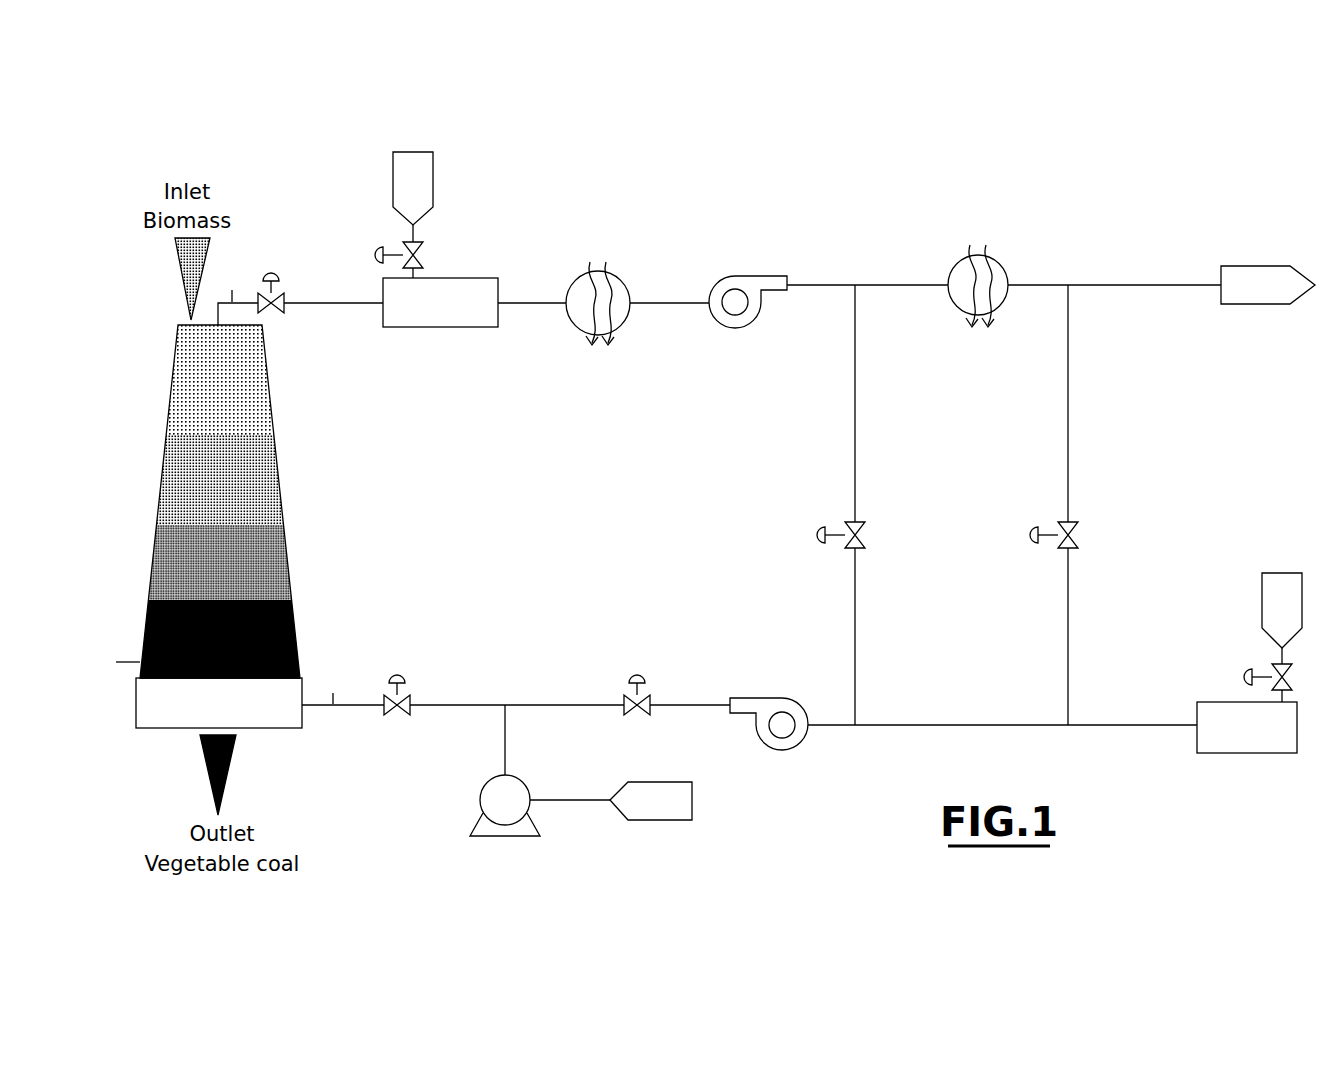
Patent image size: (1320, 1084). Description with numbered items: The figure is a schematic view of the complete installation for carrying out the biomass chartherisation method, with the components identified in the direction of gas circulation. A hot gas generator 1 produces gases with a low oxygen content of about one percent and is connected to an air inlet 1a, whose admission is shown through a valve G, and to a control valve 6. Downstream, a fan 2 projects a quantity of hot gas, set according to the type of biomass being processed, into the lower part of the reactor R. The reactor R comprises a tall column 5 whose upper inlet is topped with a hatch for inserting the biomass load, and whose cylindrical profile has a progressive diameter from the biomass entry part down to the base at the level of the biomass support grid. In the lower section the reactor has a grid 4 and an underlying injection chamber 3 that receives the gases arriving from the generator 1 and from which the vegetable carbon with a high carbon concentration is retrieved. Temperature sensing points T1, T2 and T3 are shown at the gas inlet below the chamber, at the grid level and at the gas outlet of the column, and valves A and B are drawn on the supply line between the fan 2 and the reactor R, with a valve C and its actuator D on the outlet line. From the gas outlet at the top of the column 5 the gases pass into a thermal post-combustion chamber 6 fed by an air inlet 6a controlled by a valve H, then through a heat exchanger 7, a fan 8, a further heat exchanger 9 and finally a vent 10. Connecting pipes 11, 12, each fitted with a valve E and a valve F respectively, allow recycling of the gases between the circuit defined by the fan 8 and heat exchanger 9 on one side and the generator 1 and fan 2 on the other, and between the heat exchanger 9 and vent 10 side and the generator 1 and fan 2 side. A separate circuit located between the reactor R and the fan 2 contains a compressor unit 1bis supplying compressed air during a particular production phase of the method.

The hot gas generator 1 is at (1247, 727).
The air inlet 1a is at (1262, 608).
The compressor unit 1bis is at (581, 770).
The fan 2 is at (769, 744).
The injection chamber 3 is at (219, 703).
The grid 4 is at (207, 679).
The column 5 is at (220, 502).
The thermal post-combustion chamber 6 is at (440, 302).
The air inlet 6a is at (433, 200).
The heat exchanger 7 is at (598, 312).
The fan 8 is at (748, 319).
The heat exchanger 9 is at (978, 296).
The vent 10 is at (1268, 274).
The connecting pipe 11 is at (857, 434).
The connecting pipe 12 is at (1071, 452).
The valve A is at (637, 679).
The valve B is at (397, 679).
The valve C is at (271, 280).
The valve actuator D is at (283, 270).
The valve E is at (827, 535).
The valve F is at (1039, 535).
The valve G is at (1275, 677).
The valve H is at (386, 255).
The reactor R is at (102, 716).
The temperature sensor T1 is at (331, 687).
The temperature sensor T2 is at (114, 662).
The temperature sensor T3 is at (229, 285).